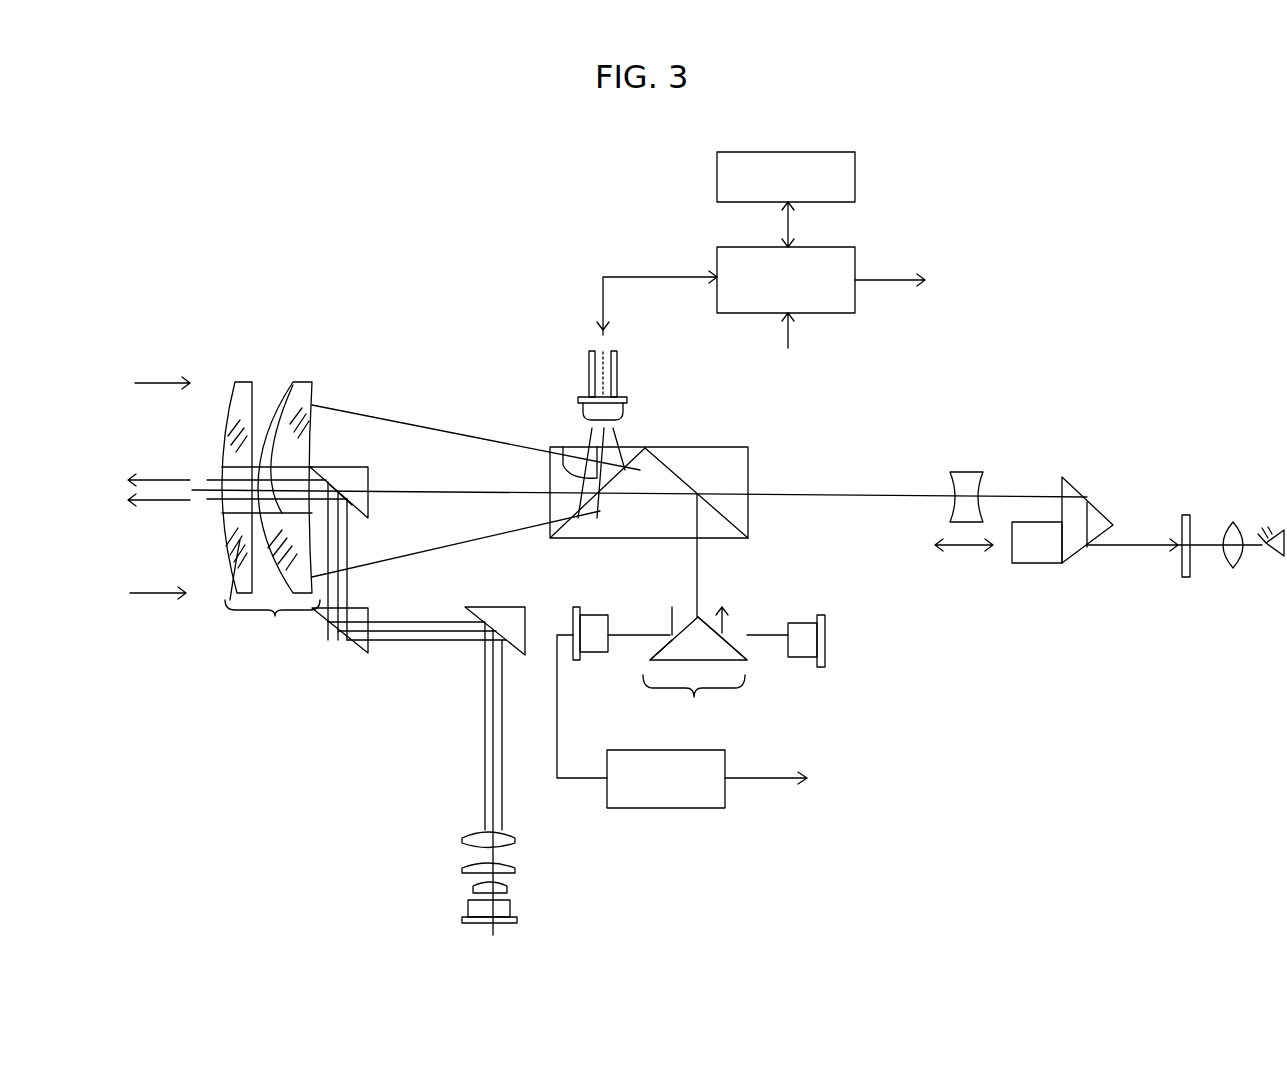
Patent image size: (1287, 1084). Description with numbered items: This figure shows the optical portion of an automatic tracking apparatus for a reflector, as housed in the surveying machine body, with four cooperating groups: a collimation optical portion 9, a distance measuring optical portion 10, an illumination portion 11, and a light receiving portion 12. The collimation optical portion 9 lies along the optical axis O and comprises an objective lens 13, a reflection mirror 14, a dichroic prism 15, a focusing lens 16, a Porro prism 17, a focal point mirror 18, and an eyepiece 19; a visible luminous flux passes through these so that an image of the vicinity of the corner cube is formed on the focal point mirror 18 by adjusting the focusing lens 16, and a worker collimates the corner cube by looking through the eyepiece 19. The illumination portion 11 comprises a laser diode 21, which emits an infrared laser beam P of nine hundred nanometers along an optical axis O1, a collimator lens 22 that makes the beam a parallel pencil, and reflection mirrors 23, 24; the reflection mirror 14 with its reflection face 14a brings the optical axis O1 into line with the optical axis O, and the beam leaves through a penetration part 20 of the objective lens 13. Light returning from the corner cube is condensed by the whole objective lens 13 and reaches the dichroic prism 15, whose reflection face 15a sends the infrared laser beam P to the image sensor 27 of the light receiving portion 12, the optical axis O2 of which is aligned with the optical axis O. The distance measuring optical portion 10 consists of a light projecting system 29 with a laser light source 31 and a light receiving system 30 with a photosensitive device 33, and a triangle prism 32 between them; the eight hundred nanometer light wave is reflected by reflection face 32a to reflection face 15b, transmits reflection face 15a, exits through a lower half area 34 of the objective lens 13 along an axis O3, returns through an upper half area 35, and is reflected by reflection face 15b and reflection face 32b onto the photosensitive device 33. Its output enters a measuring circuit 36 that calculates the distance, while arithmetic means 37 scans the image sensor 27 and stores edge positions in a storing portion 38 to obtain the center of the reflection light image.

The collimation optical portion 9 is at (897, 471).
The distance measuring optical portion 10 is at (695, 677).
The illumination portion 11 is at (425, 718).
The light receiving portion 12 is at (653, 406).
The objective lens 13 is at (272, 626).
The reflection mirror 14 is at (350, 467).
The reflection face 14a is at (360, 517).
The dichroic prism 15 is at (728, 457).
The reflection face 15a is at (637, 447).
The reflection face 15b is at (695, 480).
The focusing lens 16 is at (975, 473).
The Porro prism 17 is at (1052, 566).
The focal point mirror 18 is at (1193, 518).
The eyepiece 19 is at (1232, 568).
The penetration part 20 is at (258, 465).
The laser diode 21 is at (517, 919).
The collimator lens 22 is at (455, 830).
The reflection mirror 23 is at (517, 613).
The reflection mirror 24 is at (363, 653).
The image sensor 27 is at (628, 397).
The light projecting system 29 is at (779, 610).
The light receiving system 30 is at (636, 611).
The laser light source 31 is at (803, 623).
The triangle prism 32 is at (738, 660).
The reflection face 32a is at (740, 650).
The reflection face 32b is at (645, 645).
The photosensitive device 33 is at (594, 652).
The lower half area 34 is at (238, 560).
The upper half area 35 is at (302, 383).
The measuring circuit 36 is at (667, 802).
The arithmetic means 37 is at (838, 248).
The storing portion 38 is at (857, 182).
The optical axis O is at (462, 489).
The optical axis O1 is at (490, 670).
The optical axis O2 is at (563, 447).
The optical axis O3 is at (697, 570).
The infrared laser beam P is at (159, 488).